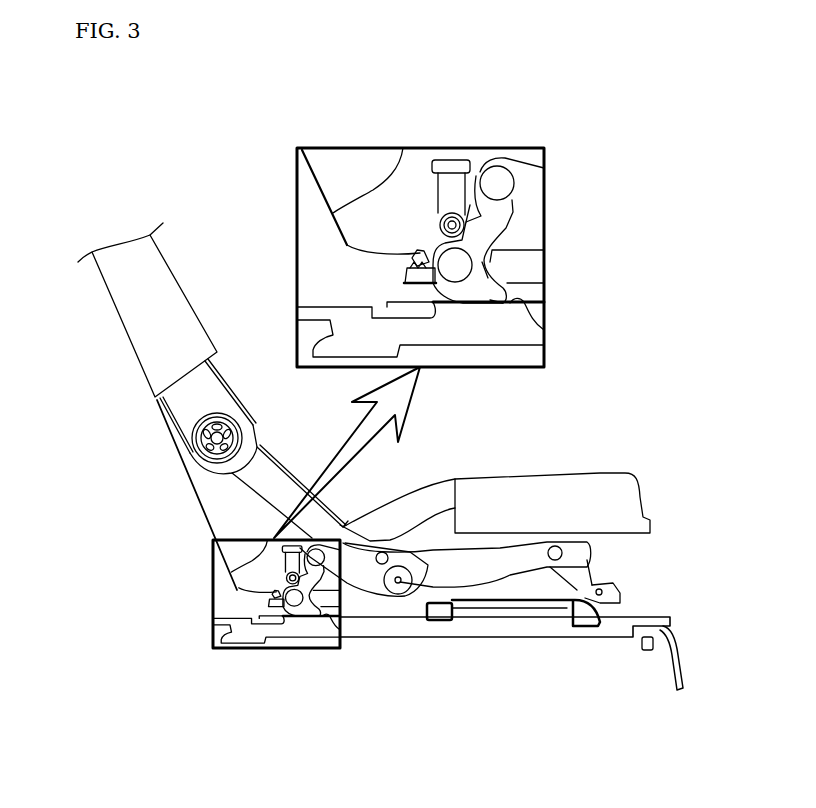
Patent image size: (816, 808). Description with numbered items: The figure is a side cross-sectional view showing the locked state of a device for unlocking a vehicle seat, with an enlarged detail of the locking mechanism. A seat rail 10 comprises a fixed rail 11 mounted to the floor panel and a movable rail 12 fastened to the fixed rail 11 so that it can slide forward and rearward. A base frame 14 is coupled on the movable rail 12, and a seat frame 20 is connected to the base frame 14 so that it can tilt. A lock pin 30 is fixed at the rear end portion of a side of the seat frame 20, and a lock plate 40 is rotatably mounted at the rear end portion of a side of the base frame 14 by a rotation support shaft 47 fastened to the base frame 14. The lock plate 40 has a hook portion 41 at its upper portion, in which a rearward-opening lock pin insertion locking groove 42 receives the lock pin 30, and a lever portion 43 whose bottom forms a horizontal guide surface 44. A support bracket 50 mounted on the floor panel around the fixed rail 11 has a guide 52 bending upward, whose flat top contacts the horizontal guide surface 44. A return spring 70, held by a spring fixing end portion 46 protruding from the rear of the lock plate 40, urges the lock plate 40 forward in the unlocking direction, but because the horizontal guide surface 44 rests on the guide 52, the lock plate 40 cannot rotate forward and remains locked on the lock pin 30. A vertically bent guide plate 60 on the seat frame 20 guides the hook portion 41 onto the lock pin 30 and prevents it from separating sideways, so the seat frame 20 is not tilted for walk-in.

The seat rail 10 is at (495, 507).
The fixed rail 11 is at (423, 313).
The movable rail 12 is at (528, 300).
The base frame 14 is at (532, 270).
The seat frame 20 is at (355, 228).
The lock pin 30 is at (433, 222).
The lock plate 40 is at (503, 213).
The hook portion 41 is at (442, 222).
The lock pin insertion locking groove 42 is at (458, 212).
The lever portion 43 is at (485, 280).
The horizontal guide surface 44 is at (493, 303).
The spring fixing end portion 46 is at (417, 254).
The rotation support shaft 47 is at (404, 288).
The support bracket 50 is at (530, 355).
The guide 52 is at (537, 294).
The guide plate 60 is at (448, 167).
The return spring 70 is at (412, 260).